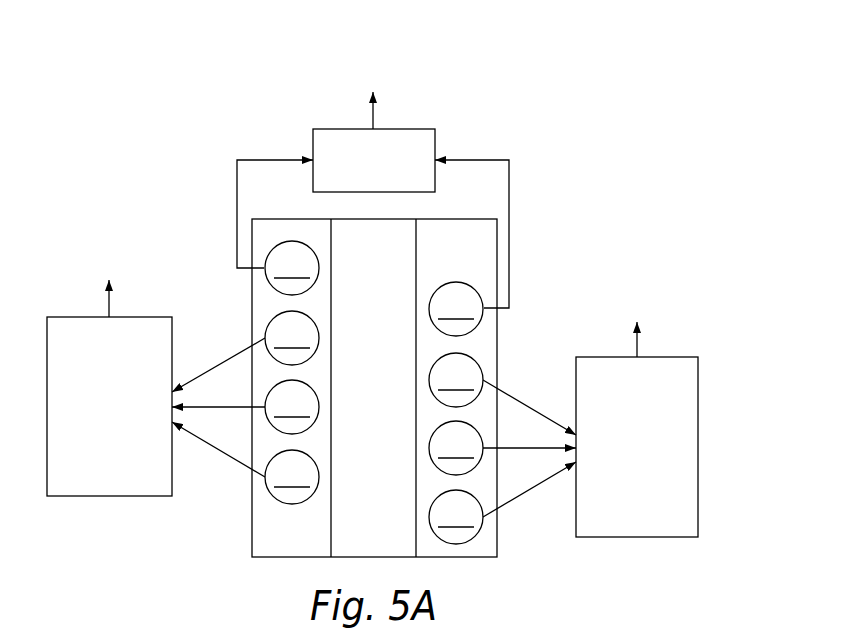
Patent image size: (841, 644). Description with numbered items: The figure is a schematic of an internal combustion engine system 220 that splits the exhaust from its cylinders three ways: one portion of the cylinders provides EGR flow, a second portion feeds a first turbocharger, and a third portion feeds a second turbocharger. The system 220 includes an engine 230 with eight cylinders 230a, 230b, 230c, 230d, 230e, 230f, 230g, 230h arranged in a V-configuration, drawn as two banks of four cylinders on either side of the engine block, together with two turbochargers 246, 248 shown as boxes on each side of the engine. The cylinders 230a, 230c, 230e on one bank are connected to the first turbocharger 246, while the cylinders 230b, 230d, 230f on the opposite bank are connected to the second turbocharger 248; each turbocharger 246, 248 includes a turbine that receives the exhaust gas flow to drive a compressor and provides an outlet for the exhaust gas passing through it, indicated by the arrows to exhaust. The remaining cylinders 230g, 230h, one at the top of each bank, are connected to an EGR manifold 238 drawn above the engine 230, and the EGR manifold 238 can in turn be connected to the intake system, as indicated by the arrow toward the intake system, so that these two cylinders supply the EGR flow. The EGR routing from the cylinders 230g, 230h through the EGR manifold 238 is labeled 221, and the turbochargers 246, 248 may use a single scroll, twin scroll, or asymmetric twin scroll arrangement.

The system 220 is at (108, 108).
The EGR passage / wiring loop 221 is at (516, 133).
The engine 230 is at (240, 550).
The cylinder 230a is at (456, 517).
The cylinder 230b is at (292, 477).
The cylinder 230c is at (456, 448).
The cylinder 230d is at (292, 407).
The cylinder 230e is at (456, 380).
The cylinder 230f is at (292, 338).
The cylinder 230g is at (456, 309).
The cylinder 230h is at (292, 268).
The EGR manifold 238 is at (428, 128).
The first turbocharger 246 is at (623, 460).
The second turbocharger 248 is at (96, 418).